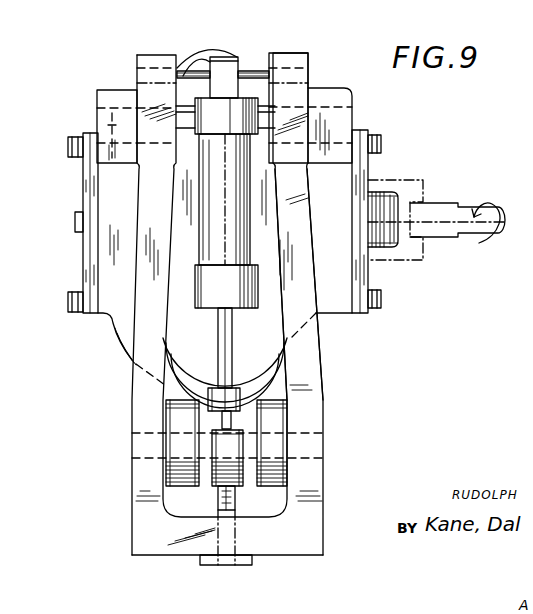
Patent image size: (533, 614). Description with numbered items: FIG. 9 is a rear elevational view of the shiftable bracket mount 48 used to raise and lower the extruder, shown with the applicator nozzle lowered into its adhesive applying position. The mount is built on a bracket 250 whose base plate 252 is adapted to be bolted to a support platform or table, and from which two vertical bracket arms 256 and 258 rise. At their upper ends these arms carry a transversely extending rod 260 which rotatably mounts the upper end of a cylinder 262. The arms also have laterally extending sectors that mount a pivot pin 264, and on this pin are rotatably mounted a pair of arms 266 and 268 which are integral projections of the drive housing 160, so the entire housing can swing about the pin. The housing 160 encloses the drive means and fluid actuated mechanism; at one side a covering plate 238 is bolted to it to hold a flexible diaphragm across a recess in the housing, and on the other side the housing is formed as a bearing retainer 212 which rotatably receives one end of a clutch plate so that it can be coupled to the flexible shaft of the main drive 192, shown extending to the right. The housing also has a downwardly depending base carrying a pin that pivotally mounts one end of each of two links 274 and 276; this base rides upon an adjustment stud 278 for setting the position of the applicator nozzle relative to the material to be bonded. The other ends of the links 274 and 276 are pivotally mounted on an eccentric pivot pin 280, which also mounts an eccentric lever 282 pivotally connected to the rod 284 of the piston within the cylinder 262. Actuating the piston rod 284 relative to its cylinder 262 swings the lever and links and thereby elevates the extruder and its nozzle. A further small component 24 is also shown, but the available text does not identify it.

The bolt 24 is at (75, 222).
The shiftable bracket mount 48 is at (317, 79).
The drive housing 160 is at (112, 335).
The main drive 192 is at (443, 191).
The bearing retainer 212 is at (388, 236).
The covering plate 238 is at (83, 180).
The bracket 250 is at (131, 556).
The base plate 252 is at (287, 565).
The vertical bracket arm 256 is at (131, 386).
The vertical bracket arm 258 is at (323, 360).
The transversely extending rod 260 is at (248, 72).
The cylinder 262 is at (240, 181).
The pivot pin 264 is at (106, 124).
The arm 266 is at (115, 89).
The arm 268 is at (336, 88).
The link 274 is at (178, 464).
The link 276 is at (262, 465).
The adjustment stud 278 is at (225, 499).
The eccentric pivot pin 280 is at (146, 441).
The eccentric lever 282 is at (253, 440).
The rod 284 is at (219, 336).